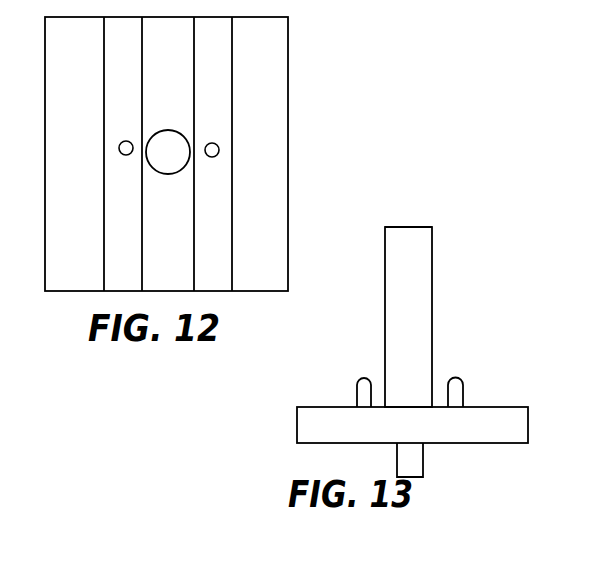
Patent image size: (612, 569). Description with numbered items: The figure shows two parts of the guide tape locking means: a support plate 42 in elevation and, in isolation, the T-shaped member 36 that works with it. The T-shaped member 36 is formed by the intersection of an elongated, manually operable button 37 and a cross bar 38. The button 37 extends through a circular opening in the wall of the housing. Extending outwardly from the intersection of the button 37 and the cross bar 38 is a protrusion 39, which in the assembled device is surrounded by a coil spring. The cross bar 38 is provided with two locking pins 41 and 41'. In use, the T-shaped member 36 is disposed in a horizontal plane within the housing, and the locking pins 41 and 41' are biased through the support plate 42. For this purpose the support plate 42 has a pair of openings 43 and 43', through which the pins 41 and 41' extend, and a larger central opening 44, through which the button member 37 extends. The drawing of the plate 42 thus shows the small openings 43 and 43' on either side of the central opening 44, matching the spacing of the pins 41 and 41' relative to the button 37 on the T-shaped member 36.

In FIG. 12, the support plate 42 is at (283, 118).
In FIG. 12, the opening 43 is at (122, 180).
In FIG. 12, the opening 43' is at (217, 179).
In FIG. 12, the opening 44 is at (166, 175).
In FIG. 13, the T-shaped member 36 is at (436, 302).
In FIG. 13, the manually operable button 37 is at (429, 243).
In FIG. 13, the cross bar 38 is at (465, 432).
In FIG. 13, the protrusion 39 is at (397, 462).
In FIG. 13, the locking pin 41 is at (349, 372).
In FIG. 13, the locking pin 41' is at (479, 371).